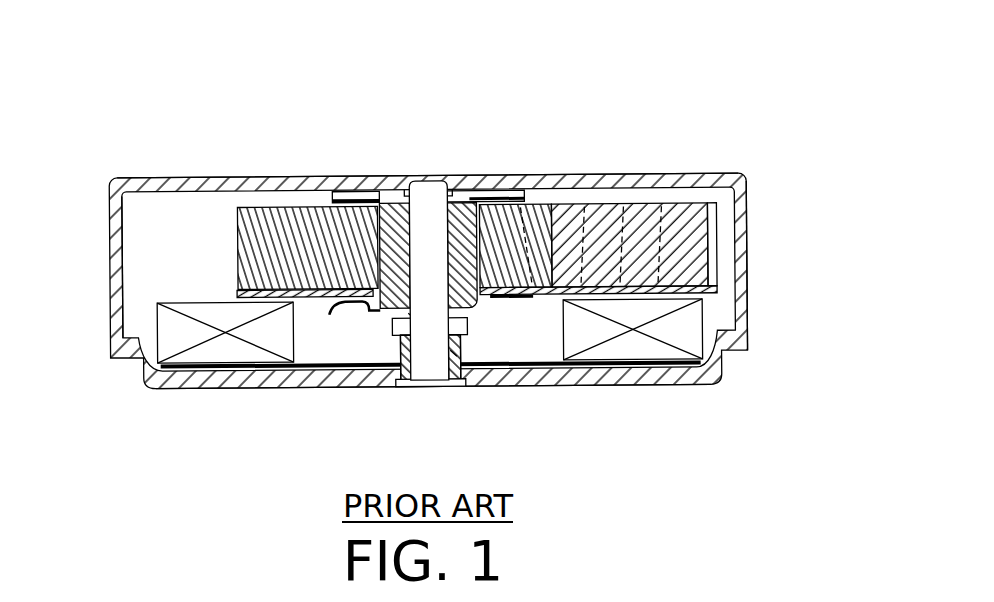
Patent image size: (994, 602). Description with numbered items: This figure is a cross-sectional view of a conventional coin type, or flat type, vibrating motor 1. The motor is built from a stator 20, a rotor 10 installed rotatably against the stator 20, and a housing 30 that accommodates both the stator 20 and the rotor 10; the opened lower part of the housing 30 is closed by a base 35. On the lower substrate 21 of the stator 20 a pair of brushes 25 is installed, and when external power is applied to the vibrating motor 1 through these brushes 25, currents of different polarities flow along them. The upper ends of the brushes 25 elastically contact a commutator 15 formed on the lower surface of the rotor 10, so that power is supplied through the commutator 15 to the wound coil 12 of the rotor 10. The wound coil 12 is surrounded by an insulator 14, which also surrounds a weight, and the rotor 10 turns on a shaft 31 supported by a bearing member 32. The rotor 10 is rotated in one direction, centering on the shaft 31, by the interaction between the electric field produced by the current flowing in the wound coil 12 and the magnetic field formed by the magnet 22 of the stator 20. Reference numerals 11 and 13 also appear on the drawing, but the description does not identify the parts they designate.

The vibrating motor 1 is at (736, 79).
The rotor 10 is at (739, 178).
The housing side wall 11 is at (717, 293).
The wound coil 12 is at (600, 210).
The yoke 13 is at (696, 204).
The insulator 14 is at (276, 207).
The commutator 15 is at (520, 300).
The stator 20 is at (158, 282).
The lower substrate 21 is at (524, 369).
The magnet 22 is at (238, 357).
The brushes 25 is at (330, 316).
The housing 30 is at (166, 176).
The shaft 31 is at (406, 181).
The bearing member 32 is at (477, 205).
The base 35 is at (657, 386).